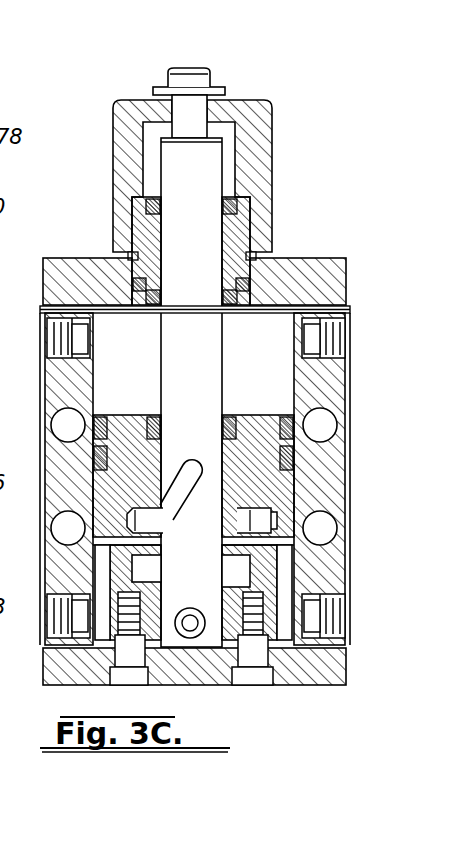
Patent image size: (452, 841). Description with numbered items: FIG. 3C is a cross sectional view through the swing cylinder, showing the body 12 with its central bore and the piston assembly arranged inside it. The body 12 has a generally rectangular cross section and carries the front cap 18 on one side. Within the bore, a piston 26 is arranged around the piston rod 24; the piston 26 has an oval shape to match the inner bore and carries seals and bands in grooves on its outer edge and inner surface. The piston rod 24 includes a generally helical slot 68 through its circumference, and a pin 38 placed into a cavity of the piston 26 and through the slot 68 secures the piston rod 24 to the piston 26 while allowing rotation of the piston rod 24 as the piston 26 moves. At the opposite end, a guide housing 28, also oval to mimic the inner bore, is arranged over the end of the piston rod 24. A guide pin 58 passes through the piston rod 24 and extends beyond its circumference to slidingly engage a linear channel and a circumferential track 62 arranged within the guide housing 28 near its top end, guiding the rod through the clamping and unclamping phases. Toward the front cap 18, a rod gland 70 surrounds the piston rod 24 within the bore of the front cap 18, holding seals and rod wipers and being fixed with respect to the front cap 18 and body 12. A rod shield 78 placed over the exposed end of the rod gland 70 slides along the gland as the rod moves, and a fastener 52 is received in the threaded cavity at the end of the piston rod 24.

The body 12 is at (56, 386).
The front cap 18 is at (297, 270).
The piston rod 24 is at (205, 156).
The piston 26 is at (254, 442).
The guide housing 28 is at (157, 615).
The pin 38 is at (138, 506).
The fastener 52 is at (205, 87).
The guide pin 58 is at (188, 608).
The circumferential track 62 is at (145, 568).
The helical slot 68 is at (173, 462).
The rod gland 70 is at (243, 228).
The rod shield 78 is at (245, 113).